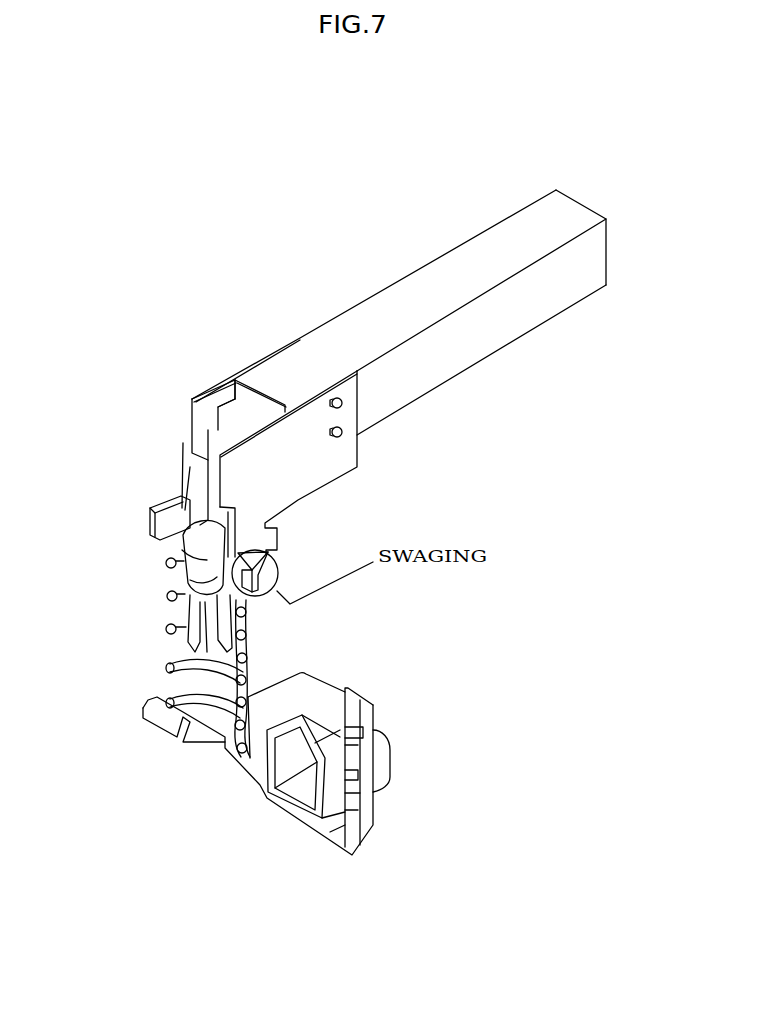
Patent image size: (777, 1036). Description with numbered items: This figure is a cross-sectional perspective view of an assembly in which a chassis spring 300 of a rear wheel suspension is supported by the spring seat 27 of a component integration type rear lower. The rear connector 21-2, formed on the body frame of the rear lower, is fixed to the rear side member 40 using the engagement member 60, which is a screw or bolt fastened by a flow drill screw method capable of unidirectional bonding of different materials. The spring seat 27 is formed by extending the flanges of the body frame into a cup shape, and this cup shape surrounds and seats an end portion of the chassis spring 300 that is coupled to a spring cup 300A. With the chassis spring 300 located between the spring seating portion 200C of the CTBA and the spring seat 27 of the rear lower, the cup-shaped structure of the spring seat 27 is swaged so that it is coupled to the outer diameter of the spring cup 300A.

The rear side member 40 is at (480, 253).
The rear connector 21-2 is at (223, 410).
The engagement member 60 is at (342, 402).
The spring seat 27 is at (187, 503).
The spring cup 300A is at (207, 560).
The chassis spring 300 is at (250, 643).
The spring seating portion 200C is at (222, 750).